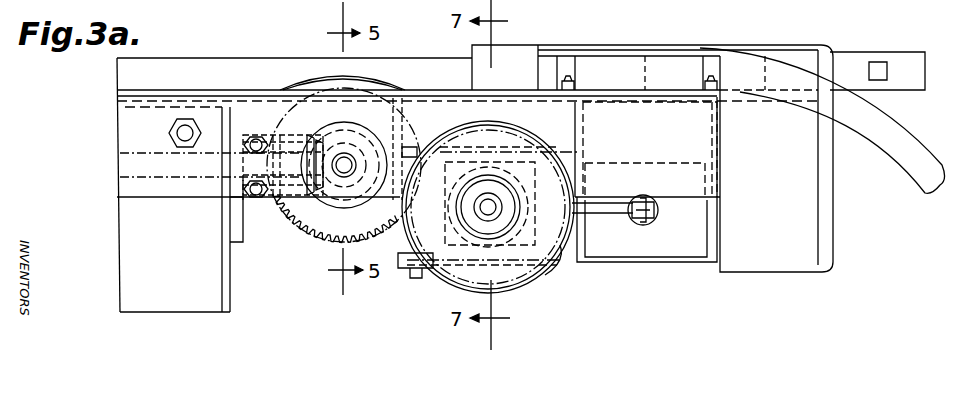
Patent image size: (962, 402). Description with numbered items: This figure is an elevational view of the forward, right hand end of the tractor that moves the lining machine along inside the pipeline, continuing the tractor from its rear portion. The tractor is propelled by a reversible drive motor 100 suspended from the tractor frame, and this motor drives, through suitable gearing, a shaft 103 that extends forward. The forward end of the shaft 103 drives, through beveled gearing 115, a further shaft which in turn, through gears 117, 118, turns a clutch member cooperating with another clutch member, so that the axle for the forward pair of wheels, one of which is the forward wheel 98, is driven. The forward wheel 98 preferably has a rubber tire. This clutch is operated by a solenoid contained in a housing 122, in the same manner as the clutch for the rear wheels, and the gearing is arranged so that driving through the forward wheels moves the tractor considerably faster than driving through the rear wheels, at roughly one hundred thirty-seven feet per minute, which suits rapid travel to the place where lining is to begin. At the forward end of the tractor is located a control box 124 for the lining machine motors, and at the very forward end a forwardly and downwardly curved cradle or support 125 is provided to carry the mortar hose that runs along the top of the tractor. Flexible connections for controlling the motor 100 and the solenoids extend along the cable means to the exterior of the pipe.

The forward wheel 98 is at (537, 277).
The reversible drive motor 100 is at (180, 298).
The shaft 103 is at (183, 175).
The beveled gearing 115 is at (310, 231).
The gear 117 is at (330, 242).
The gear 118 is at (457, 285).
The housing 122 is at (648, 248).
The control box 124 is at (768, 265).
The cradle or support 125 is at (880, 138).